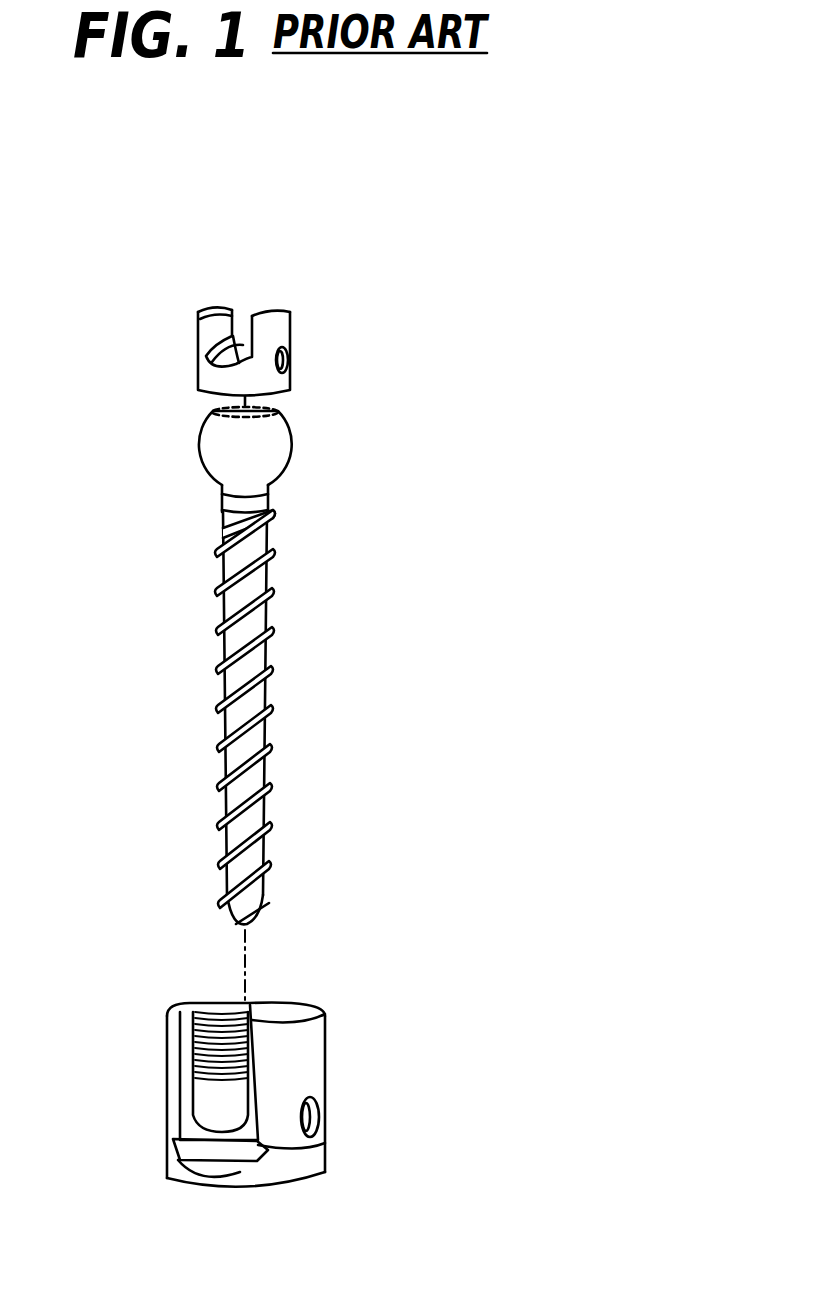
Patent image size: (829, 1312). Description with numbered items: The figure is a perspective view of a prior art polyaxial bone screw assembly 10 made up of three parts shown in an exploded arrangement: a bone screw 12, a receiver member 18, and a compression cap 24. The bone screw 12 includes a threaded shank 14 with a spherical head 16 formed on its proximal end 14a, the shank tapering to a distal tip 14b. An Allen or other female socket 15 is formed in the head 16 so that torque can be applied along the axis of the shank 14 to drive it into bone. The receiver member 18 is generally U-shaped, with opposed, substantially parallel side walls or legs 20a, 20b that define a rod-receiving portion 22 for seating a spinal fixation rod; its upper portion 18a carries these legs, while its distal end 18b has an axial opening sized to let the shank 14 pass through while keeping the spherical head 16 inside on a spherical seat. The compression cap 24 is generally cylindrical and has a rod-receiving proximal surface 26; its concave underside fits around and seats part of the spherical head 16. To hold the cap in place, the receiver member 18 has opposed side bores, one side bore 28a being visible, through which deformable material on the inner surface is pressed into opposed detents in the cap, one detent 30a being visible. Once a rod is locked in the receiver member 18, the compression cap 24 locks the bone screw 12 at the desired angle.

The polyaxial bone screw assembly 10 is at (124, 250).
The bone screw 12 is at (176, 420).
The threaded shank 14 is at (421, 488).
The proximal end 14a is at (287, 509).
The distal tip 14b is at (284, 903).
The female socket 15 is at (255, 408).
The spherical head 16 is at (265, 468).
The receiver member 18 is at (70, 1020).
The upper housing portion 18a is at (335, 1037).
The distal end 18b is at (330, 1177).
The side wall 20a is at (313, 1092).
The side wall 20b is at (178, 1043).
The rod-receiving portion 22 is at (265, 996).
The compression cap 24 is at (174, 305).
The rod-receiving proximal surface 26 is at (237, 327).
The side bore 28a is at (320, 1118).
The detent 30a is at (300, 361).